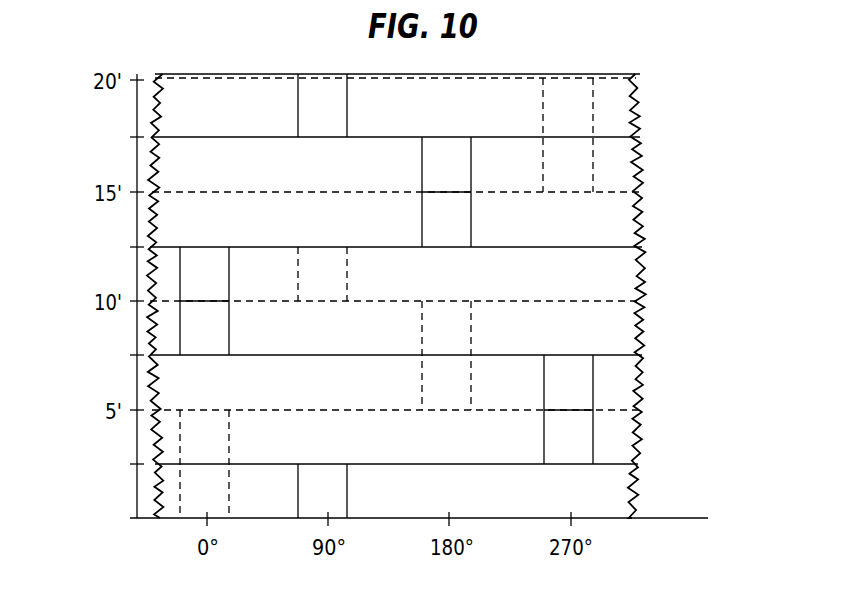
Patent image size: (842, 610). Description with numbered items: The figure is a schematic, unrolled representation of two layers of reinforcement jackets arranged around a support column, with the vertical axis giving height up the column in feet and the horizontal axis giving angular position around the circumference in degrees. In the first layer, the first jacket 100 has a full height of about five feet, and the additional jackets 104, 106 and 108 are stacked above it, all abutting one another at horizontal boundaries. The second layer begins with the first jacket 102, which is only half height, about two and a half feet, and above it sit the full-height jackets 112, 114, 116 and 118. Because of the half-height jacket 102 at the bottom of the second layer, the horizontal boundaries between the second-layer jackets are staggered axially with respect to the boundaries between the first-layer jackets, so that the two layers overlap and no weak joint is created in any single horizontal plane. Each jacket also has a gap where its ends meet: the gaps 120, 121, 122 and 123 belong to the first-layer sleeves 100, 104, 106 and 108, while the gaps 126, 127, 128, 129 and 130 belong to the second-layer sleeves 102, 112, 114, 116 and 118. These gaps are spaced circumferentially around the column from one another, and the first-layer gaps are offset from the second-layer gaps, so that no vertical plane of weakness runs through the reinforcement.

The first jacket of the first layer 100 is at (617, 498).
The first jacket of the second layer 102 is at (620, 475).
The jacket of the first layer 104 is at (620, 337).
The jacket of the first layer 106 is at (620, 225).
The jacket of the first layer 108 is at (622, 115).
The jacket of the second layer 112 is at (620, 385).
The jacket of the second layer 114 is at (620, 277).
The jacket of the second layer 116 is at (620, 170).
The jacket of the second layer 118 is at (630, 83).
The gap of sleeve 100 120 is at (218, 487).
The gap of sleeve 104 121 is at (440, 332).
The gap of sleeve 106 122 is at (335, 268).
The gap of sleeve 108 123 is at (553, 162).
The gap of sleeve 102 126 is at (338, 487).
The gap of sleeve 112 127 is at (558, 433).
The gap of sleeve 114 128 is at (215, 327).
The gap of sleeve 116 129 is at (465, 215).
The gap of sleeve 118 130 is at (333, 107).